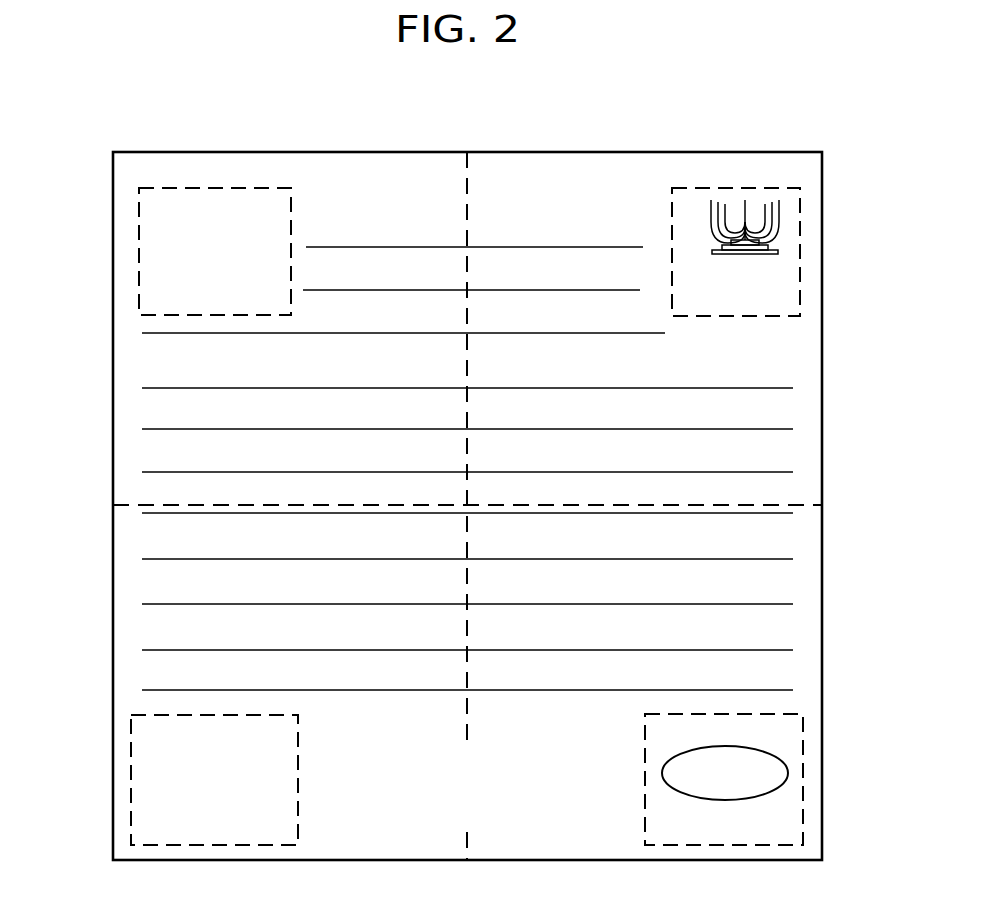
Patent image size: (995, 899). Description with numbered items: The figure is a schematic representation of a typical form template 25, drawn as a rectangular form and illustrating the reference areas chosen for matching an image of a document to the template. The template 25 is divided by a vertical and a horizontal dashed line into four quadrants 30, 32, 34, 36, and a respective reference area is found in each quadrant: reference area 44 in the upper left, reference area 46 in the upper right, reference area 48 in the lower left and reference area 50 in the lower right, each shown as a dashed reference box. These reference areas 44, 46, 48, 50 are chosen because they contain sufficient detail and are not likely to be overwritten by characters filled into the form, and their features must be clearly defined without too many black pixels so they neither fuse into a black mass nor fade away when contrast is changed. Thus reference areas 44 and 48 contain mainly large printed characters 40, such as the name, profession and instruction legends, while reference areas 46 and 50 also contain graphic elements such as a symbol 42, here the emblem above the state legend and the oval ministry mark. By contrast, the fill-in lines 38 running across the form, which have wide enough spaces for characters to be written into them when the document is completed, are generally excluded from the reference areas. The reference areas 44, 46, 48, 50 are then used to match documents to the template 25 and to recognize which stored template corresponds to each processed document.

The form template 25 is at (110, 86).
The quadrant 30 is at (112, 408).
The quadrant 32 is at (822, 340).
The quadrant 34 is at (112, 592).
The quadrant 36 is at (822, 578).
The lines 38 is at (352, 247).
The printed characters 40 is at (232, 220).
The symbol 42 is at (722, 218).
The reference area 44 is at (290, 228).
The reference area 46 is at (700, 316).
The reference area 48 is at (131, 730).
The reference area 50 is at (645, 778).